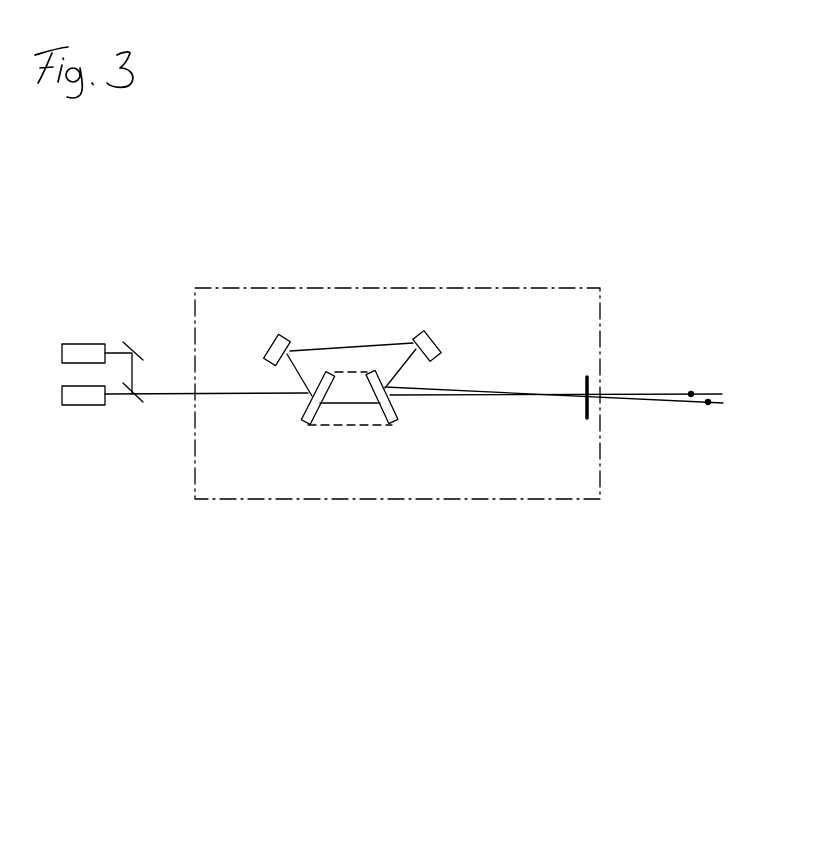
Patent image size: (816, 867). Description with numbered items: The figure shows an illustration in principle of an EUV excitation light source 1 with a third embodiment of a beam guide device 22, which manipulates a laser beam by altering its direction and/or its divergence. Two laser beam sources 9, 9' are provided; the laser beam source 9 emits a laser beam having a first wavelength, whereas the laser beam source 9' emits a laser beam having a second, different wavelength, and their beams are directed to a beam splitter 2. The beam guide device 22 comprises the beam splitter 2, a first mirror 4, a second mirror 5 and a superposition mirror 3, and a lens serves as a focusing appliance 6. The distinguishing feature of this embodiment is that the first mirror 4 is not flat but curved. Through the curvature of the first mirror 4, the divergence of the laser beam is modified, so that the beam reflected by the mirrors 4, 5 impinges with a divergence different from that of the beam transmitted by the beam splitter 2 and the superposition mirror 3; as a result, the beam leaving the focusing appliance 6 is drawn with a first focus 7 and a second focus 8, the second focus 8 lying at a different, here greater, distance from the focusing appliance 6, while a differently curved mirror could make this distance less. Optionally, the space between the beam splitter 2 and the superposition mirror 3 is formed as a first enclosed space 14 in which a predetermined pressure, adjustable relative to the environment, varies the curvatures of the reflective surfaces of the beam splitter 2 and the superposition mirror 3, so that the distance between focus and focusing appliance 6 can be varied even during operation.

The EUV excitation light source 1 is at (158, 740).
The beam splitter 2 is at (300, 420).
The superposition mirror 3 is at (400, 417).
The first mirror 4 is at (275, 338).
The second mirror 5 is at (433, 333).
The focusing appliance 6 is at (587, 418).
The first beam axis / beam 7 is at (691, 393).
The second focus 8 is at (708, 404).
The laser beam source 9 is at (185, 450).
The laser beam source 9' is at (102, 313).
The first enclosed space 14 is at (353, 413).
The beam guide device 22 is at (475, 500).